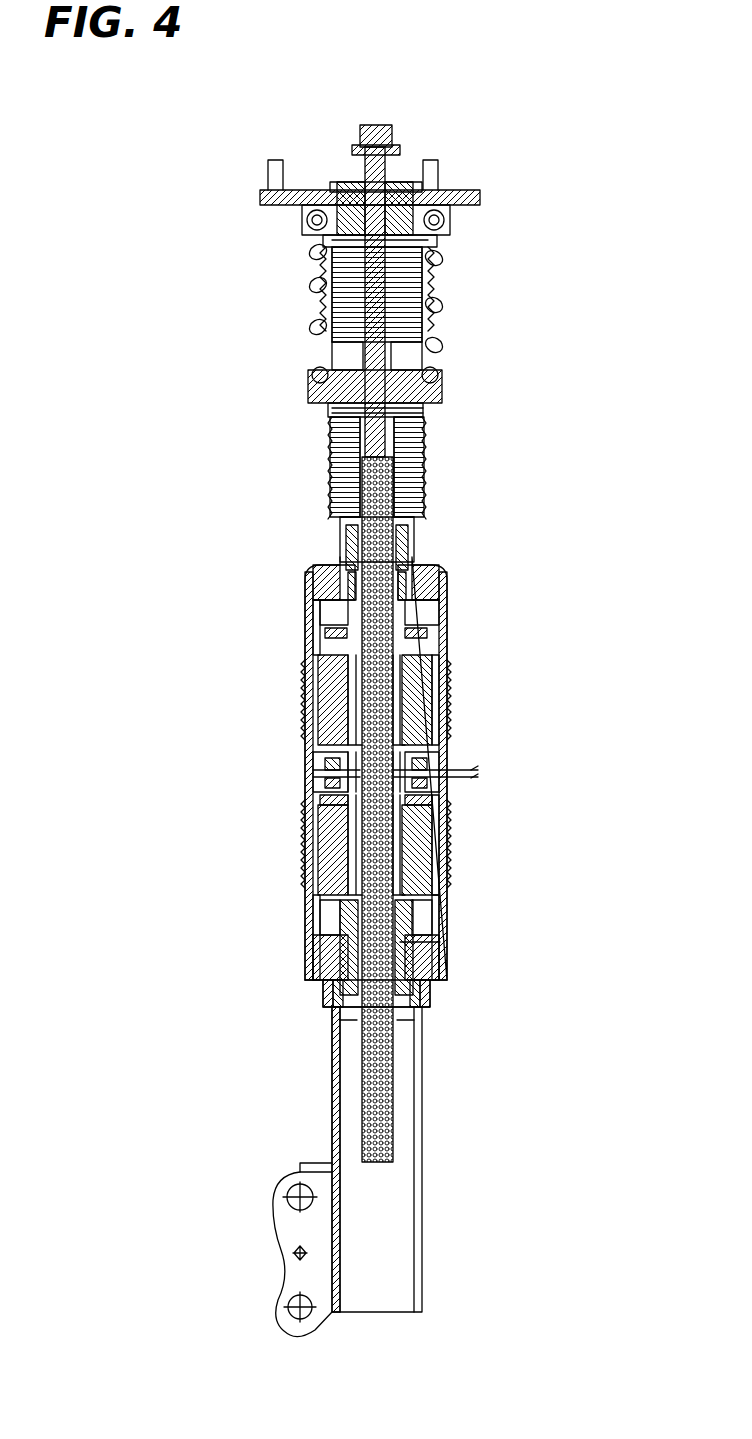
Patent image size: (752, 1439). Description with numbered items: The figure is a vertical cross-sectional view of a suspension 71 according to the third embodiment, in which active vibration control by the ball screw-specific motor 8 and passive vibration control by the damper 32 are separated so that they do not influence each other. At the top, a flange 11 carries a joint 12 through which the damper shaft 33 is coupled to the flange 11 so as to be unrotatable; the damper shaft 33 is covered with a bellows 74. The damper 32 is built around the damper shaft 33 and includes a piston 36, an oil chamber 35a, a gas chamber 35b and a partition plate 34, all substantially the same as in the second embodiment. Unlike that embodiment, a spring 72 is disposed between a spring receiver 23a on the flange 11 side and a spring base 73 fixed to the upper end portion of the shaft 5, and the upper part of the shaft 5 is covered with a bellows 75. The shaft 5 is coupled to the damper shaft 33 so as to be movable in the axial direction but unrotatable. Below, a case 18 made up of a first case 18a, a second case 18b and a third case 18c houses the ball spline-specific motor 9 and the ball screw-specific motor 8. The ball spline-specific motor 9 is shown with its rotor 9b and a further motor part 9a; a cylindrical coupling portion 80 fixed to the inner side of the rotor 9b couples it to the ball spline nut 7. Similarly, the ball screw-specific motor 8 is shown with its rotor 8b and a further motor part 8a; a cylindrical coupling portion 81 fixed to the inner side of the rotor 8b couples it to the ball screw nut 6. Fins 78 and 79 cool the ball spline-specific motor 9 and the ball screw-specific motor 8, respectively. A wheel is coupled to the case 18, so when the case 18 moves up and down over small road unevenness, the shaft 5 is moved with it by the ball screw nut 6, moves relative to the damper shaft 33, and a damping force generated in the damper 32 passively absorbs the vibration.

The suspension 71 is at (395, 61).
The shaft 5 is at (410, 440).
The flange 11 is at (455, 188).
The joint 12 is at (405, 188).
The spring receiver 23a is at (440, 230).
The damper shaft 33 is at (417, 283).
The bellows 74 is at (330, 297).
The spring 72 is at (440, 300).
The spring base 73 is at (443, 396).
The damper 32 is at (330, 447).
The piston 36 is at (330, 480).
The bellows 75 is at (330, 499).
The case 18 is at (453, 633).
The ball spline nut 7 is at (440, 592).
The oil chamber 35a is at (318, 605).
The first case 18a is at (316, 625).
The cylindrical coupling portion 80 is at (438, 678).
The fin 78 is at (308, 692).
The ball spline-specific motor 9 is at (468, 700).
The upper stator 9a is at (440, 700).
The rotor 9b is at (440, 725).
The partition plate 34 is at (330, 768).
The gas chamber 35b is at (320, 815).
The cylindrical coupling portion 81 is at (438, 826).
The fin 79 is at (308, 858).
The ball screw-specific motor 8 is at (468, 845).
The lower stator 8a is at (440, 850).
The rotor 8b is at (440, 880).
The second case 18b is at (312, 920).
The ball screw nut 6 is at (452, 940).
The third case 18c is at (330, 1100).